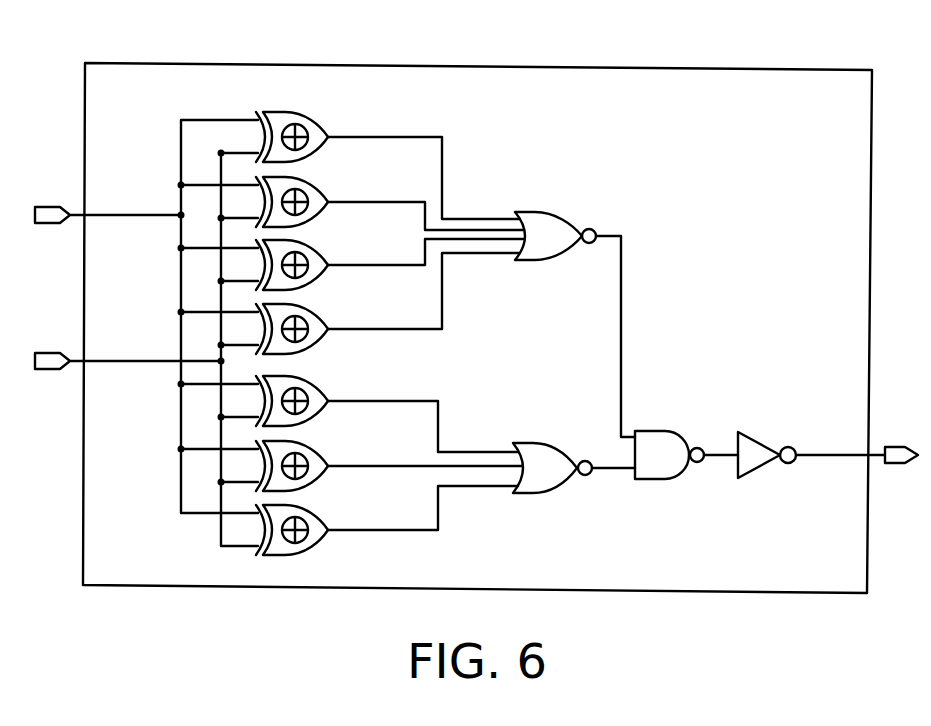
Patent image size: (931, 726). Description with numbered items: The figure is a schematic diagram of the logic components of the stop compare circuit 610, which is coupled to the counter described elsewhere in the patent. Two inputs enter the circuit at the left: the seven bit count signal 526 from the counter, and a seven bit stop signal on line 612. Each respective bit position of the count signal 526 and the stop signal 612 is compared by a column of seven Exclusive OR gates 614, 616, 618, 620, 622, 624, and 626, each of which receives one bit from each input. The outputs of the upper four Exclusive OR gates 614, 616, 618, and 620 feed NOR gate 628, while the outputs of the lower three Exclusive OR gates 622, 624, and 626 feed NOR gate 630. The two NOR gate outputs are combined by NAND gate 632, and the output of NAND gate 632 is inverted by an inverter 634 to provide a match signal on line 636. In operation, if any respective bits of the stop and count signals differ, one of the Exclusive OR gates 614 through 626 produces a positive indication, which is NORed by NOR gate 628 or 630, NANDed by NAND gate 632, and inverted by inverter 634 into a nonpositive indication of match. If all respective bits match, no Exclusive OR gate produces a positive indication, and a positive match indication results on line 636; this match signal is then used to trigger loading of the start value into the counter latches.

The stop compare circuit 610 is at (680, 67).
The stop signal line 612 is at (127, 213).
The count signal 526 is at (125, 357).
The Exclusive OR gate 614 is at (321, 123).
The Exclusive OR gate 616 is at (321, 188).
The Exclusive OR gate 618 is at (321, 251).
The Exclusive OR gate 620 is at (321, 315).
The Exclusive OR gate 622 is at (321, 387).
The Exclusive OR gate 624 is at (321, 452).
The Exclusive OR gate 626 is at (321, 516).
The NOR gate 628 is at (535, 210).
The NOR gate 630 is at (528, 442).
The NAND gate 632 is at (662, 427).
The inverter 634 is at (758, 434).
The match signal line 636 is at (830, 452).